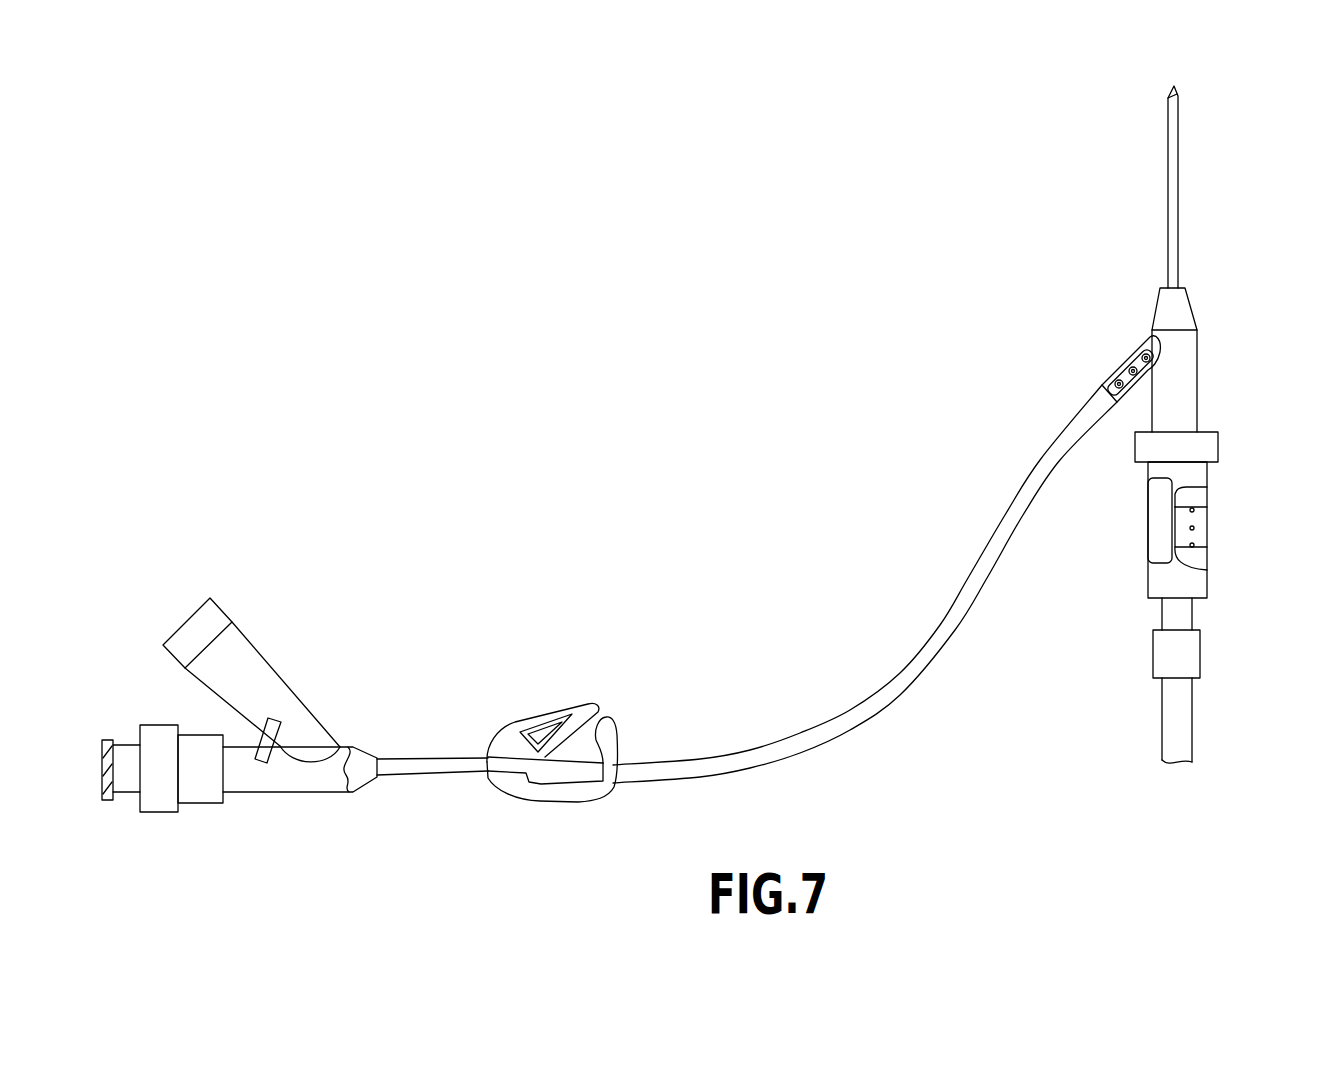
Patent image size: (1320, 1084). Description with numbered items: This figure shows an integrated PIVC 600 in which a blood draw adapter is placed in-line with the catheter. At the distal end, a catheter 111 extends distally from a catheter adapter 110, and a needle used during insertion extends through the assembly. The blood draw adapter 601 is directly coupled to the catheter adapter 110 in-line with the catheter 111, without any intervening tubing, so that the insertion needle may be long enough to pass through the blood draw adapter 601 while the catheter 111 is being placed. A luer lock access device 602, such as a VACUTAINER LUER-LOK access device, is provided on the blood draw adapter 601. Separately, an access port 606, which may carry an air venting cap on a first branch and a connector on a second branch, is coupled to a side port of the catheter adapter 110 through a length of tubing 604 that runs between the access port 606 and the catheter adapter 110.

The PIVC 600 is at (975, 312).
The tubing 604 is at (422, 776).
The access port 606 is at (292, 803).
The catheter adapter 110 is at (1204, 374).
The catheter 111 is at (1178, 148).
The blood draw adapter 601 is at (1212, 520).
The luer lock access device 602 is at (1195, 699).